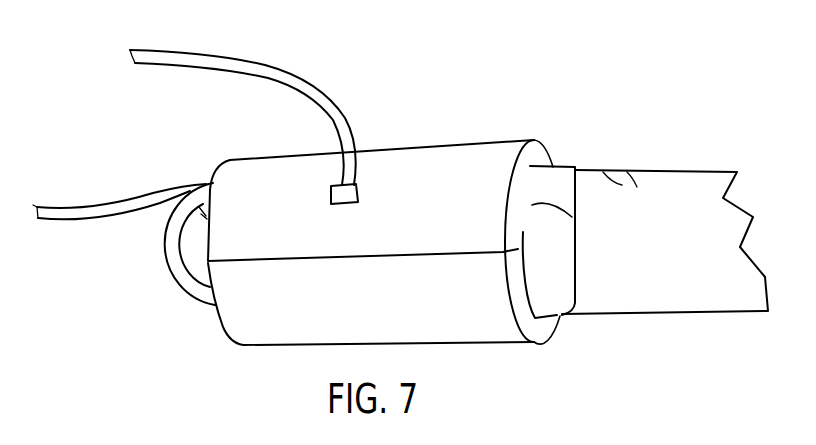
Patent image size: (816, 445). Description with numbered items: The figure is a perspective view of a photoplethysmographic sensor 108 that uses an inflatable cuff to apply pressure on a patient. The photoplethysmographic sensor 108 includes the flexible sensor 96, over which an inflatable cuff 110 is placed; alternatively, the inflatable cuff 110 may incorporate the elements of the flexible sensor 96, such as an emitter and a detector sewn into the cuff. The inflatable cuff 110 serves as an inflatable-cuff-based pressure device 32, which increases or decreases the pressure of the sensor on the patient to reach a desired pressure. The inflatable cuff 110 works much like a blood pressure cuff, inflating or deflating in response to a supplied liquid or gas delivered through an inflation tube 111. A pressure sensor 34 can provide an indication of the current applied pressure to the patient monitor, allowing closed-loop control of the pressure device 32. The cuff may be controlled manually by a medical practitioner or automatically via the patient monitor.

The photoplethysmographic sensor 108 is at (469, 75).
The pressure device 32 is at (460, 140).
The pressure sensor 34 is at (475, 180).
The flexible sensor 96 is at (557, 182).
The inflatable cuff 110 is at (230, 172).
The inflation tube 111 is at (300, 82).